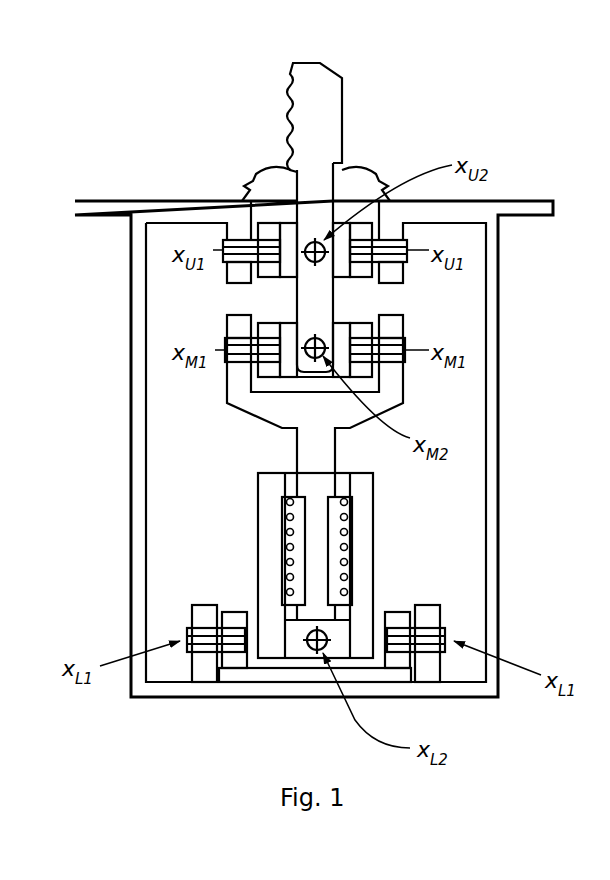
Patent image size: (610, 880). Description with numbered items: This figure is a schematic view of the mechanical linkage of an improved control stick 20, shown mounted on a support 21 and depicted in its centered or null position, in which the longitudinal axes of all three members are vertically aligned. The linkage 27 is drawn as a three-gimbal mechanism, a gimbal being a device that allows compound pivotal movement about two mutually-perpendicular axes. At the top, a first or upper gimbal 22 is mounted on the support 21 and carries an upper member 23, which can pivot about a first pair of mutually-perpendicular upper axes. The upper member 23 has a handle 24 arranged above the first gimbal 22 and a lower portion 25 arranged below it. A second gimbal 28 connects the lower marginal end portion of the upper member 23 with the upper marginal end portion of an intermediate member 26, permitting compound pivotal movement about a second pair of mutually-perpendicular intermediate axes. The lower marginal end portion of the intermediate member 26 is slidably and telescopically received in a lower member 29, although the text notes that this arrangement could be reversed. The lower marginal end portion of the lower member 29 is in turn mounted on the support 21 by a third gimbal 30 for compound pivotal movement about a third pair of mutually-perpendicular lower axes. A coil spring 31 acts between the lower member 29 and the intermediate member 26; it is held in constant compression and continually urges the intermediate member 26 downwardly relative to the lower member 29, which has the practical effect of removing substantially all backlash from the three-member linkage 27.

The control stick 20 is at (424, 88).
The support 21 is at (504, 405).
The first or upper gimbal 22 is at (255, 273).
The upper member 23 is at (322, 210).
The handle 24 is at (288, 126).
The lower portion 25 is at (322, 290).
The intermediate member 26 is at (296, 445).
The linkage 27 is at (227, 163).
The second gimbal 28 is at (251, 368).
The lower member 29 is at (370, 537).
The third gimbal 30 is at (218, 603).
The coil spring 31 is at (282, 542).